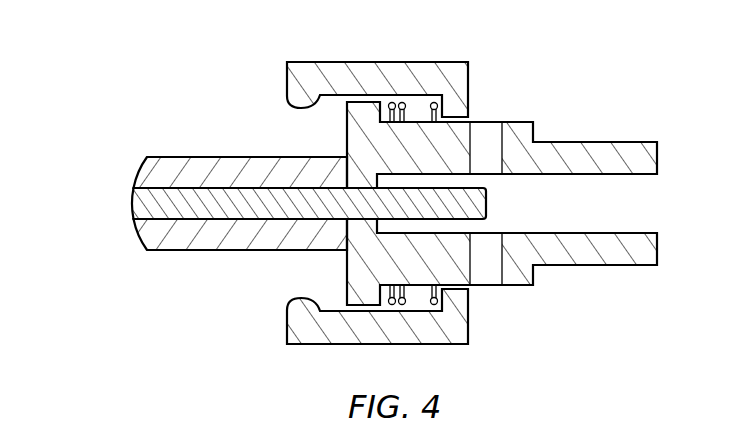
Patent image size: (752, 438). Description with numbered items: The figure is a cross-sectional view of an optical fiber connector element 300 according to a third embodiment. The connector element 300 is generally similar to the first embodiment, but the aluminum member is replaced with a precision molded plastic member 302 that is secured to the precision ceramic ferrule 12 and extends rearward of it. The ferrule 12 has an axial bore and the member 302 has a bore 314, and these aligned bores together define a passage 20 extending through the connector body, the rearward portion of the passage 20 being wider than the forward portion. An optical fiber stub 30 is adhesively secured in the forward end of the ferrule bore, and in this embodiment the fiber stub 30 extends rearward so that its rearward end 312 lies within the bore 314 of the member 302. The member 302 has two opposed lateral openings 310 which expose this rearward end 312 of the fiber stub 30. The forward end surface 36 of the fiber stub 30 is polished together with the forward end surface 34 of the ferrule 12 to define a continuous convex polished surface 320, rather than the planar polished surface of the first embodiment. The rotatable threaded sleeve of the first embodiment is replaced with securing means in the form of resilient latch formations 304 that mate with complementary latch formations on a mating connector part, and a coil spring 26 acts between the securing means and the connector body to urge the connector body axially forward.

The precision ceramic ferrule 12 is at (267, 163).
The passage 20 is at (585, 208).
The coil spring 26 is at (424, 108).
The optical fiber stub 30 is at (213, 207).
The forward end surface of the ferrule 34 is at (142, 168).
The forward end surface of the fiber stub 36 is at (137, 203).
The connector element 300 is at (503, 62).
The precision molded plastic member 302 is at (605, 142).
The resilient latch formations 304 is at (366, 62).
The lateral openings 310 is at (487, 130).
The rearward end of the optical fiber stub 312 is at (487, 207).
The bore of the member 314 is at (637, 186).
The continuous convex polished surface 320 is at (80, 154).